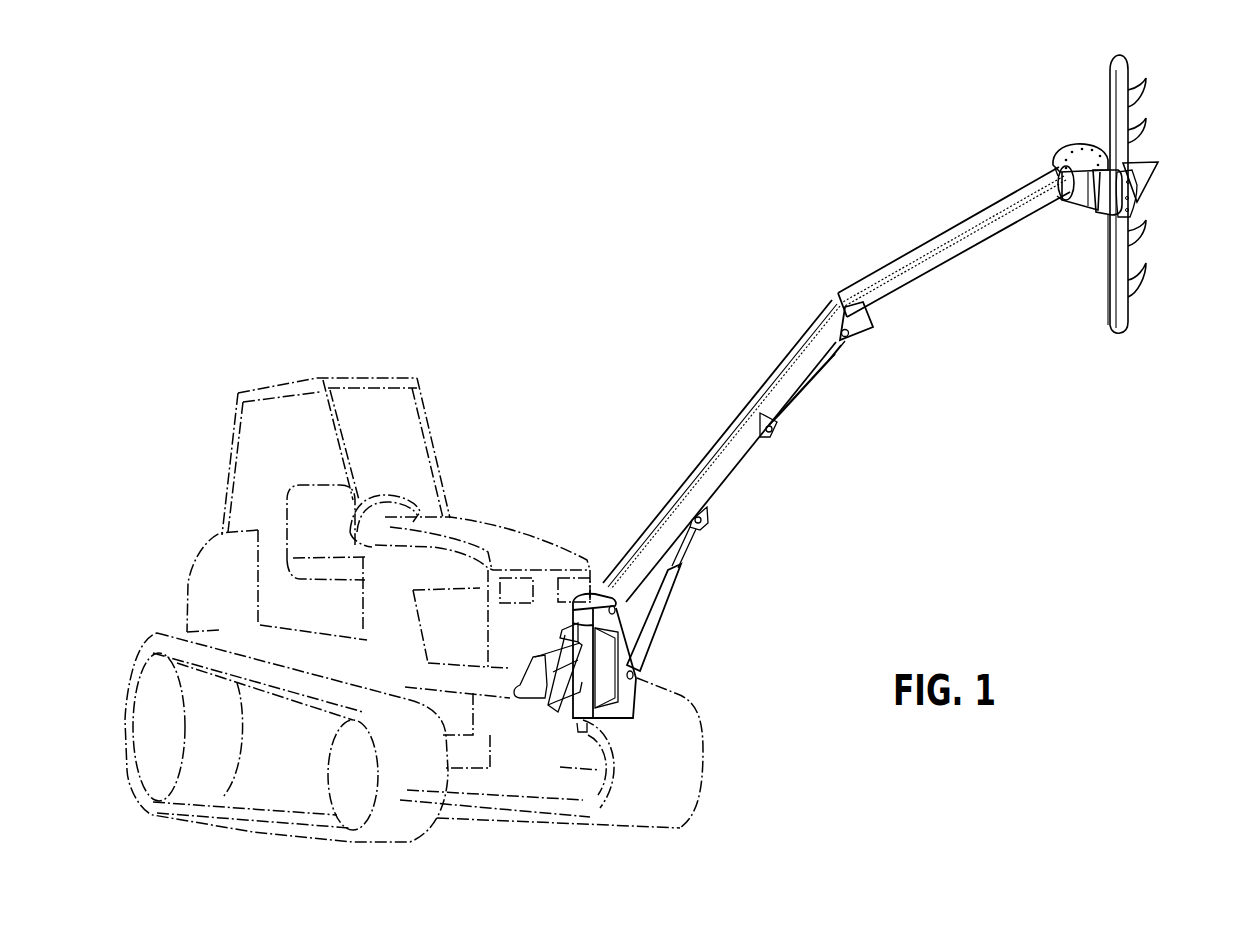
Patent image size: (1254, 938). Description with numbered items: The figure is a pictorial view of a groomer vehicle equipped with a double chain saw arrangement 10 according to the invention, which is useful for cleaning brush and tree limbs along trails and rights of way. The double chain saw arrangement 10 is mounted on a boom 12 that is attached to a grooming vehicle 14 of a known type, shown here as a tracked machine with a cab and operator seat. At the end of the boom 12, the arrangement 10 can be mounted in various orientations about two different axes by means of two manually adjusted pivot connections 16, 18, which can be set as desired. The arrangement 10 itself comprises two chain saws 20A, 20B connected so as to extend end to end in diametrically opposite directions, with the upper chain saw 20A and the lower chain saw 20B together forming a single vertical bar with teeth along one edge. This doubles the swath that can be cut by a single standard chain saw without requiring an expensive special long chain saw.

The double chain saw arrangement 10 is at (1172, 111).
The boom 12 is at (876, 262).
The grooming vehicle 14 is at (494, 474).
The pivot connection 16 is at (1079, 154).
The pivot connection 18 is at (1072, 201).
The chain saw 20A is at (1106, 86).
The chain saw 20B is at (1100, 293).